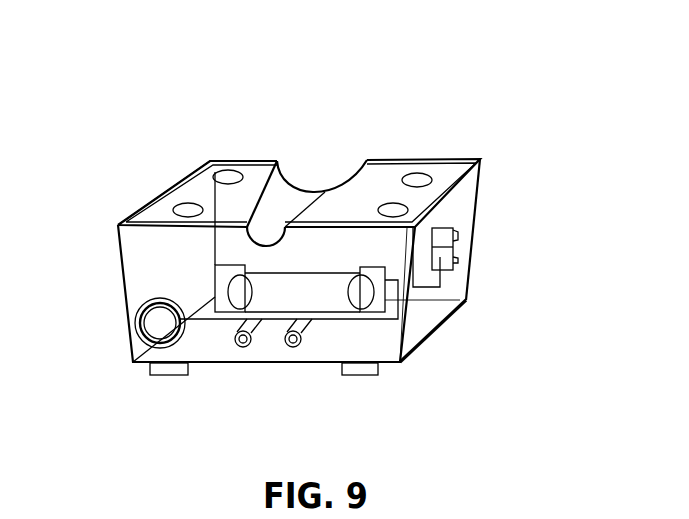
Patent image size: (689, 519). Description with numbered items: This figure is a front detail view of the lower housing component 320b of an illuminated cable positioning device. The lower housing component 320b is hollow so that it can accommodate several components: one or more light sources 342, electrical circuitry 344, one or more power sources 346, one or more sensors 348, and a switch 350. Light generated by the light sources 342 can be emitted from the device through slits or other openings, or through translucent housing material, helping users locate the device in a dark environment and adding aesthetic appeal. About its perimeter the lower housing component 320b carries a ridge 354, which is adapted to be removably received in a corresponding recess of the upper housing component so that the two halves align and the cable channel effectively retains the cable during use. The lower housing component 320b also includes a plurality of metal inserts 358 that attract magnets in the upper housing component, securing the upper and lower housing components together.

The lower housing component 320b is at (466, 215).
The light sources 342 is at (285, 350).
The electrical circuitry 344 is at (196, 335).
The power sources 346 is at (324, 303).
The sensors 348 is at (136, 327).
The switch 350 is at (450, 258).
The ridge 354 is at (137, 217).
The metal inserts 358 is at (228, 170).